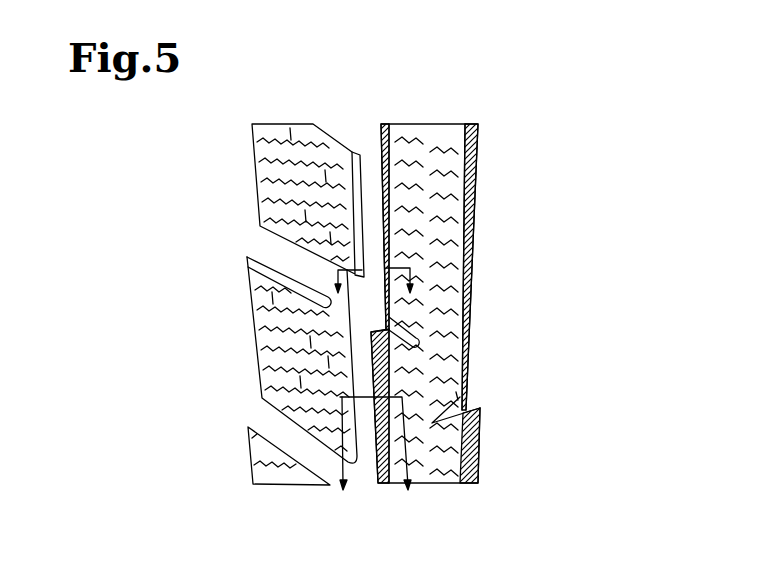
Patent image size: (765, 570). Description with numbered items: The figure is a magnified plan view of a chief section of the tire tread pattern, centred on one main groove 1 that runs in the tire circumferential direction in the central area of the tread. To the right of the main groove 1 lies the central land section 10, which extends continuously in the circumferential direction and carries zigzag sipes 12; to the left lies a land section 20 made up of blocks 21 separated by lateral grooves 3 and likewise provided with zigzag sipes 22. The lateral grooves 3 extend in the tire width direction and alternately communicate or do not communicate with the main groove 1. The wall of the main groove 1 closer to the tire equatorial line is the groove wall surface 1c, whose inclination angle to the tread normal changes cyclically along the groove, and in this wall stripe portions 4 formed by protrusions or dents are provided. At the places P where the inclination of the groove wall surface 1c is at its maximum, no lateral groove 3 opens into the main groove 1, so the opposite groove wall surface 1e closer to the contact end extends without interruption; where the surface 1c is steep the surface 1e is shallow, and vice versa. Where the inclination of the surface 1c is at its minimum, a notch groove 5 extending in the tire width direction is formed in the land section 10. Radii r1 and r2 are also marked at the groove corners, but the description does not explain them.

The land section 20 is at (288, 123).
The sipes 22 is at (262, 192).
The blocks 21 is at (262, 357).
The lateral grooves 3 is at (278, 250).
The main groove 1 is at (370, 448).
The groove wall surface closer to the tire equatorial line 1c is at (366, 128).
The groove wall surface closer to the contact end 1e is at (352, 160).
The stripe portions 4 is at (386, 122).
The land section 10 is at (431, 298).
The notch grooves 5 is at (457, 395).
The sipes 12 is at (441, 468).
The place of maximum inclination angle P is at (371, 332).
The radius r1 is at (408, 299).
The radius r2 is at (343, 301).